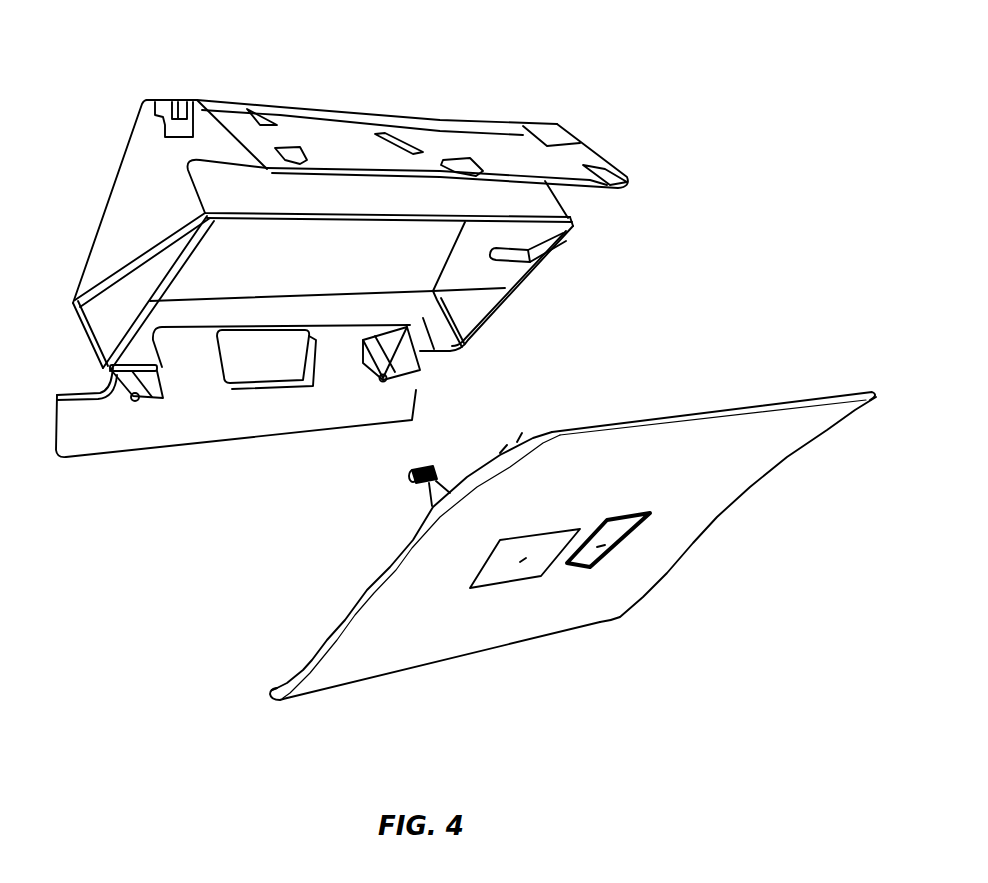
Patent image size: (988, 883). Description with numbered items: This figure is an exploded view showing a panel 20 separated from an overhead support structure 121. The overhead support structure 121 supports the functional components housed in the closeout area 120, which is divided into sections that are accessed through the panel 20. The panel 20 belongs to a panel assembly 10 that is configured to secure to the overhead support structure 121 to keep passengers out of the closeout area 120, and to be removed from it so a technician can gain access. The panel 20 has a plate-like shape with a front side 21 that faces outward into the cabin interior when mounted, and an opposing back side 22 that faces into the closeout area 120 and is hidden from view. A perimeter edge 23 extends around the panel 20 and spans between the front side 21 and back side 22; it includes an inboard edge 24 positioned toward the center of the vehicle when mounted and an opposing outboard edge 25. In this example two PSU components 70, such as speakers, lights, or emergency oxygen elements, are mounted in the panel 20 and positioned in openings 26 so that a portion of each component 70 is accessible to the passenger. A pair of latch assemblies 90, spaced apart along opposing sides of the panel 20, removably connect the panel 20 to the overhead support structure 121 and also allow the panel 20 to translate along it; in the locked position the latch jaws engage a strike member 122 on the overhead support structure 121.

The panel assembly 10 is at (700, 296).
The panel 20 is at (740, 476).
The front side 21 is at (433, 640).
The back side 22 is at (632, 420).
The perimeter edge 23 is at (383, 557).
The inboard edge 24 is at (697, 417).
The outboard edge 25 is at (260, 689).
The openings 26 is at (653, 513).
The passenger support unit (PSU) components 70 is at (603, 545).
The latch assembly 90 is at (828, 380).
The closeout area 120 is at (361, 239).
The overhead support structure 121 is at (143, 183).
The strike member 122 is at (147, 400).